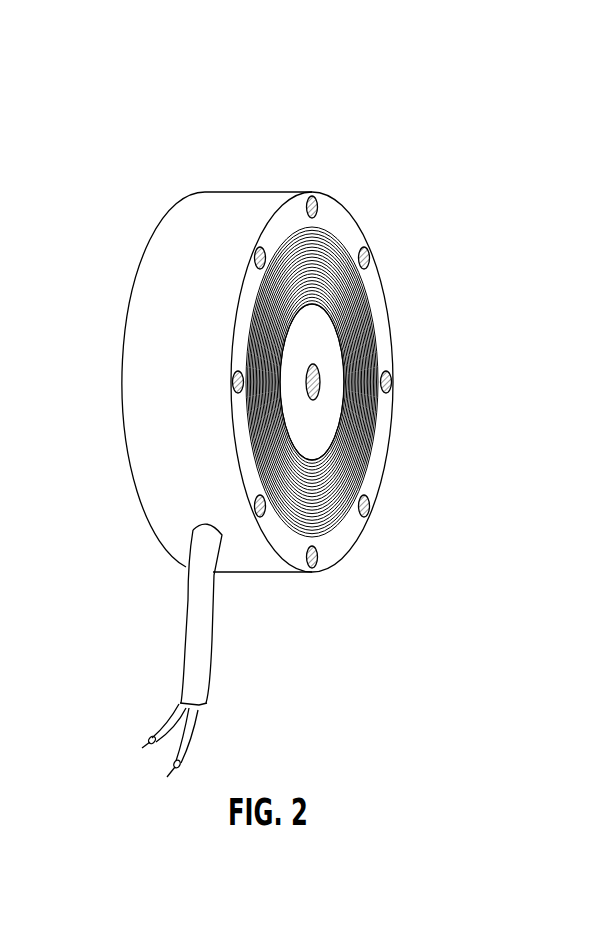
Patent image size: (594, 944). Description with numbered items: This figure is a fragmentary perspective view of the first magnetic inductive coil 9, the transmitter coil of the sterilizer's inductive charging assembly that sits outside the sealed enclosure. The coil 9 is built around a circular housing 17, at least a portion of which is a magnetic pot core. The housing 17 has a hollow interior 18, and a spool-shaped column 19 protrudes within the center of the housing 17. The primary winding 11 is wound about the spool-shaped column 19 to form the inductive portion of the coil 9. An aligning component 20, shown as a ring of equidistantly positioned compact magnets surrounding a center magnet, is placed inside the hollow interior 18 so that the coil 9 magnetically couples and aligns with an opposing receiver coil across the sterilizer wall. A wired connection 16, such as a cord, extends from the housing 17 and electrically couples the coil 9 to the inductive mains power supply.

The first magnetic inductive coil 9 is at (148, 143).
The primary winding 11 is at (315, 512).
The wired connection 16 is at (198, 612).
The circular housing 17 is at (196, 372).
The hollow interior 18 is at (395, 463).
The spool-shaped column 19 is at (328, 408).
The aligning component 20 is at (322, 207).